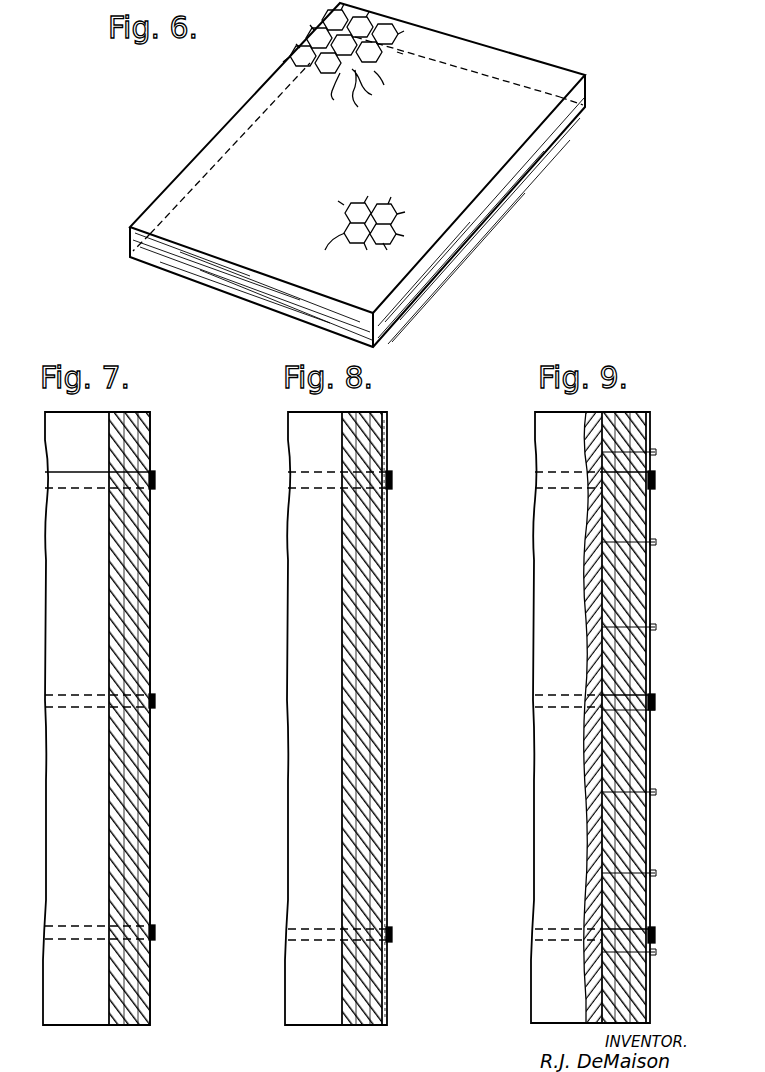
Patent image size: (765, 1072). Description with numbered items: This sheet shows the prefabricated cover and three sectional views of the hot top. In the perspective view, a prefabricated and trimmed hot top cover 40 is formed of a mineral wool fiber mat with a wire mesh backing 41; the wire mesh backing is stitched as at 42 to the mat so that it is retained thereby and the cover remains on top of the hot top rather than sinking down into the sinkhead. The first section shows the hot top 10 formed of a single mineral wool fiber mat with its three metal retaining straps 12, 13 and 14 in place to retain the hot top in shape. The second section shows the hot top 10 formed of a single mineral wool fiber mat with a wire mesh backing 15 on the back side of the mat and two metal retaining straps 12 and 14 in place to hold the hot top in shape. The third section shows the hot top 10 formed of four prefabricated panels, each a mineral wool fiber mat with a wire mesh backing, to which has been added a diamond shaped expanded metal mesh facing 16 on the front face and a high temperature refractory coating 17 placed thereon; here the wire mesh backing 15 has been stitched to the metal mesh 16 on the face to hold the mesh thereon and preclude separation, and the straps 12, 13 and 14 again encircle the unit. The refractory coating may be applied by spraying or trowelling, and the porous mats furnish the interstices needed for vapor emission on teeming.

In FIG. 7, the hot top 10 is at (90, 547).
In FIG. 8, the hot top 10 is at (326, 547).
In FIG. 9, the hot top 10 is at (590, 717).
In FIG. 7, the metal retaining strap 12 is at (156, 479).
In FIG. 8, the metal retaining strap 12 is at (393, 480).
In FIG. 9, the metal retaining strap 12 is at (657, 480).
In FIG. 7, the metal retaining strap 13 is at (156, 700).
In FIG. 9, the metal retaining strap 13 is at (657, 700).
In FIG. 7, the metal retaining strap 14 is at (156, 932).
In FIG. 8, the metal retaining strap 14 is at (393, 935).
In FIG. 9, the metal retaining strap 14 is at (657, 935).
In FIG. 8, the wire mesh backing 15 is at (388, 727).
In FIG. 9, the wire mesh backing 15 is at (651, 830).
In FIG. 9, the diamond shaped expanded metal mesh facing 16 is at (600, 777).
In FIG. 9, the high temperature refractory coating 17 is at (590, 578).
In FIG. 6, the hot top cover 40 is at (480, 185).
In FIG. 6, the wire mesh backing 41 is at (322, 19).
In FIG. 6, the stitching 42 is at (353, 172).